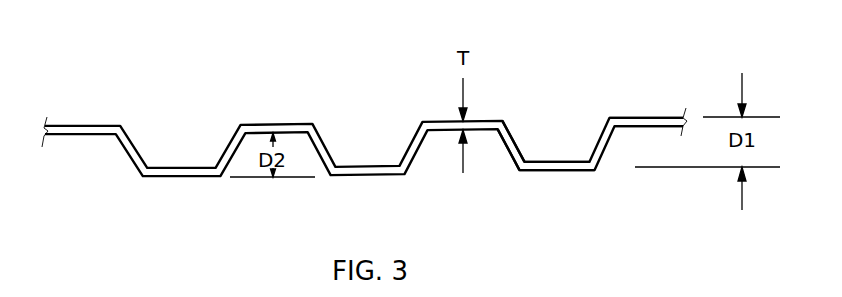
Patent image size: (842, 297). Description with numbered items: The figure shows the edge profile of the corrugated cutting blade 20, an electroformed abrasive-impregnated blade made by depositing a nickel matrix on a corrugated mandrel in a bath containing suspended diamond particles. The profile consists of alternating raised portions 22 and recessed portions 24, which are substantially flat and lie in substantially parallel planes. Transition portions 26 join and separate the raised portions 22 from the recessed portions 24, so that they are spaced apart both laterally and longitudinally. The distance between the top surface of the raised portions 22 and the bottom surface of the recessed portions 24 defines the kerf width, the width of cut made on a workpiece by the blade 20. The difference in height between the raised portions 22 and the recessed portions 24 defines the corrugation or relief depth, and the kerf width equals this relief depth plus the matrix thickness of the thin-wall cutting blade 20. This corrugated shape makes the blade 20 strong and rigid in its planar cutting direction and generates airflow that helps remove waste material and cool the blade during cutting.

The cutting blade 20 is at (292, 98).
The raised portions 22 is at (626, 116).
The recessed portions 24 is at (562, 169).
The transition portions 26 is at (514, 143).